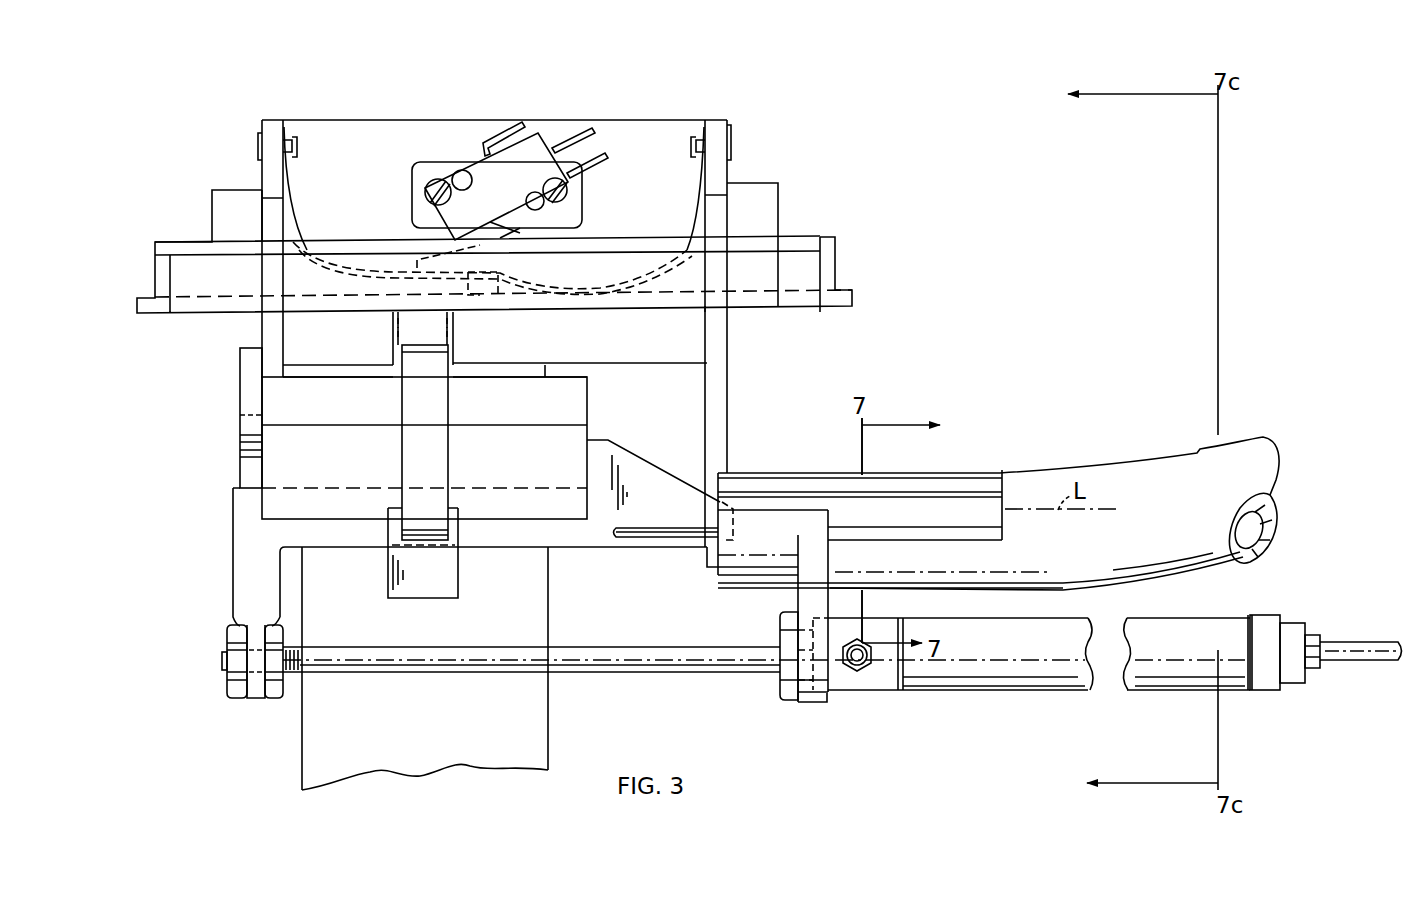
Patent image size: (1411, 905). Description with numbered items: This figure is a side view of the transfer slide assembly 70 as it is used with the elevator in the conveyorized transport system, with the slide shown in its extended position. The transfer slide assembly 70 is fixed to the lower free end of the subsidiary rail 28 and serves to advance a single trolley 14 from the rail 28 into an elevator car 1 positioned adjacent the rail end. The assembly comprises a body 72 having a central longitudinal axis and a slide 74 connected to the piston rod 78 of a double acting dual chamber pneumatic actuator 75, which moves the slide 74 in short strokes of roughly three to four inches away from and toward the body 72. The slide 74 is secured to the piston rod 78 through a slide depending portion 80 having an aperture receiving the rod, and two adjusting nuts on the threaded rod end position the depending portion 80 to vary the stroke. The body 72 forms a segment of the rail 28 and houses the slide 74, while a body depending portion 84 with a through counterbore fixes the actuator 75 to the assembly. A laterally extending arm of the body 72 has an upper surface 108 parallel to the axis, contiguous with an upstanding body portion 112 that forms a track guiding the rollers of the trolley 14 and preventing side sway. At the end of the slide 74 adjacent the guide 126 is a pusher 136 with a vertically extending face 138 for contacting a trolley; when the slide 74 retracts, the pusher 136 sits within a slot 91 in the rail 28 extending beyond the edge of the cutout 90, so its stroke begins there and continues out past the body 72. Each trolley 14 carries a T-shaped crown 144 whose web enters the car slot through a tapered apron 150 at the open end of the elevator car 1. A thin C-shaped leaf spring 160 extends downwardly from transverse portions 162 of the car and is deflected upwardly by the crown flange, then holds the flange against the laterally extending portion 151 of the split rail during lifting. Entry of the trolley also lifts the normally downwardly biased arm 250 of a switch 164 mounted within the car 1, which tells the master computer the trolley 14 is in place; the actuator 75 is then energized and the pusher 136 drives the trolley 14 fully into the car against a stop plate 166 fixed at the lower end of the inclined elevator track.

The elevator car 1 is at (668, 112).
The trolley 14 is at (540, 715).
The subsidiary rail 28 is at (1262, 462).
The transfer slide assembly 70 is at (887, 702).
The body 72 is at (970, 486).
The slide 74 is at (572, 530).
The pneumatic actuator 75 is at (950, 683).
The piston rod 78 is at (712, 672).
The slide depending portion 80 is at (243, 591).
The body depending portion 84 is at (810, 695).
The cutout 90 is at (1001, 517).
The slot 91 is at (1170, 461).
The upper surface 108 is at (900, 517).
The upstanding body portion 112 is at (918, 482).
The guide 126 is at (647, 540).
The pusher 136 is at (660, 480).
The vertically extending face 138 is at (594, 452).
The crown 144 is at (478, 302).
The apron 150 is at (840, 291).
The laterally extending portion 151 is at (742, 302).
The leaf spring 160 is at (697, 198).
The transverse portion 162 is at (272, 135).
The switch 164 is at (533, 148).
The stop plate 166 is at (247, 394).
The switch arm 250 is at (533, 222).